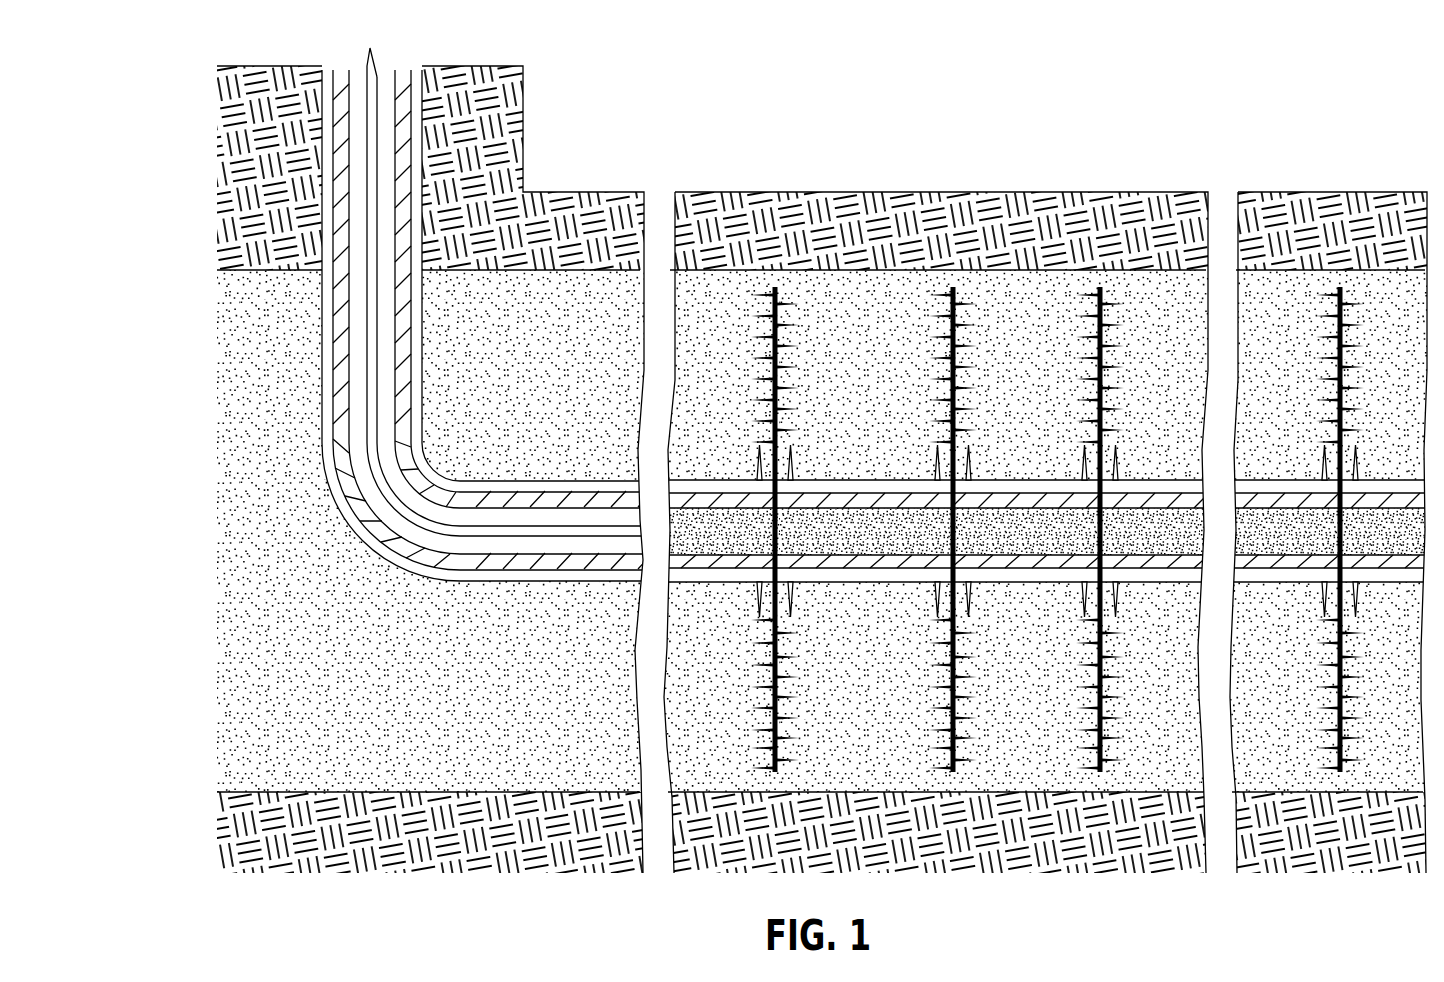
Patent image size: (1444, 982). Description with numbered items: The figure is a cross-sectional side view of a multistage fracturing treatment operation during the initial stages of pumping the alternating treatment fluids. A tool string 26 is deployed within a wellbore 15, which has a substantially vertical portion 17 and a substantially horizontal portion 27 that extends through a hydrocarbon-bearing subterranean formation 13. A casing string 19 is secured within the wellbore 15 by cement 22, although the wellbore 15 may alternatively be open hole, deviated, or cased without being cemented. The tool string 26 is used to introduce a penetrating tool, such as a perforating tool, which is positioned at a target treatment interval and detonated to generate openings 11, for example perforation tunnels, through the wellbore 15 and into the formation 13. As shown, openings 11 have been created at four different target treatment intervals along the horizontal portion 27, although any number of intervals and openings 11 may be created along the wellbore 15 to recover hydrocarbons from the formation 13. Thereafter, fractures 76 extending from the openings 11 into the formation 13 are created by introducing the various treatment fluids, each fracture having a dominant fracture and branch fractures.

The openings 11 is at (795, 465).
The hydrocarbon-bearing subterranean formation 13 is at (467, 700).
The wellbore 15 is at (515, 167).
The substantially vertical portion 17 is at (425, 137).
The casing string 19 is at (413, 107).
The cement 22 is at (417, 78).
The tool string 26 is at (367, 185).
The substantially horizontal portion 27 is at (531, 480).
The fractures 76 is at (777, 304).